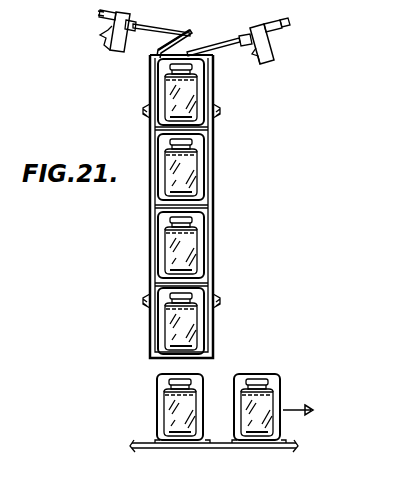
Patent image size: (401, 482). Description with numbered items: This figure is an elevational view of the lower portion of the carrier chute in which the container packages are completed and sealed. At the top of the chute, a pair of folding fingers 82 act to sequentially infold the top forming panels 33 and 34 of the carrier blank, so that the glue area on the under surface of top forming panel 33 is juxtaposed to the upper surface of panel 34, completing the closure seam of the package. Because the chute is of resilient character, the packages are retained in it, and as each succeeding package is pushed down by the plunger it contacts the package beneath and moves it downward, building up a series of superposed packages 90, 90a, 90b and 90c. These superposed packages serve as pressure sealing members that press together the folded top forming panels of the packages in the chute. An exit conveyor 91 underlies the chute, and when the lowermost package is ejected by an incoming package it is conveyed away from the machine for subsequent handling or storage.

The top forming panel 33 is at (186, 36).
The top forming panel 34 is at (207, 44).
The folding fingers 82 is at (136, 40).
The package 90 is at (208, 129).
The package 90a is at (208, 162).
The package 90b is at (210, 233).
The package 90c is at (210, 318).
The exit conveyor 91 is at (200, 449).